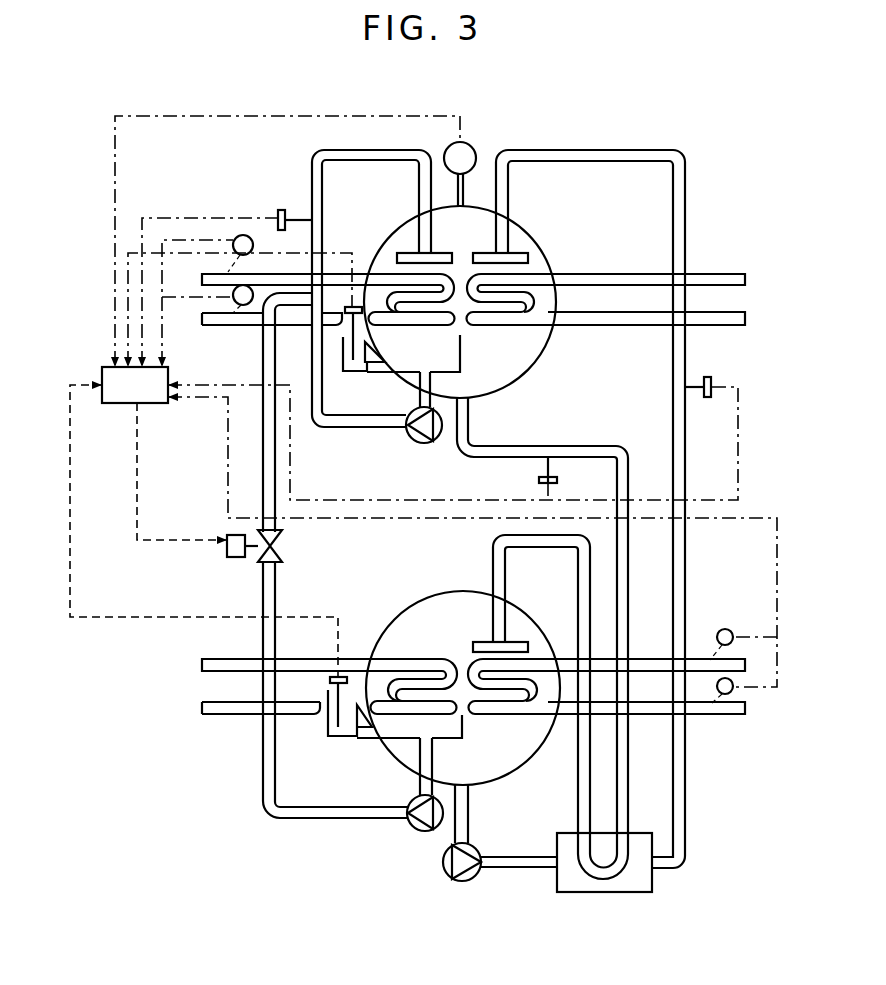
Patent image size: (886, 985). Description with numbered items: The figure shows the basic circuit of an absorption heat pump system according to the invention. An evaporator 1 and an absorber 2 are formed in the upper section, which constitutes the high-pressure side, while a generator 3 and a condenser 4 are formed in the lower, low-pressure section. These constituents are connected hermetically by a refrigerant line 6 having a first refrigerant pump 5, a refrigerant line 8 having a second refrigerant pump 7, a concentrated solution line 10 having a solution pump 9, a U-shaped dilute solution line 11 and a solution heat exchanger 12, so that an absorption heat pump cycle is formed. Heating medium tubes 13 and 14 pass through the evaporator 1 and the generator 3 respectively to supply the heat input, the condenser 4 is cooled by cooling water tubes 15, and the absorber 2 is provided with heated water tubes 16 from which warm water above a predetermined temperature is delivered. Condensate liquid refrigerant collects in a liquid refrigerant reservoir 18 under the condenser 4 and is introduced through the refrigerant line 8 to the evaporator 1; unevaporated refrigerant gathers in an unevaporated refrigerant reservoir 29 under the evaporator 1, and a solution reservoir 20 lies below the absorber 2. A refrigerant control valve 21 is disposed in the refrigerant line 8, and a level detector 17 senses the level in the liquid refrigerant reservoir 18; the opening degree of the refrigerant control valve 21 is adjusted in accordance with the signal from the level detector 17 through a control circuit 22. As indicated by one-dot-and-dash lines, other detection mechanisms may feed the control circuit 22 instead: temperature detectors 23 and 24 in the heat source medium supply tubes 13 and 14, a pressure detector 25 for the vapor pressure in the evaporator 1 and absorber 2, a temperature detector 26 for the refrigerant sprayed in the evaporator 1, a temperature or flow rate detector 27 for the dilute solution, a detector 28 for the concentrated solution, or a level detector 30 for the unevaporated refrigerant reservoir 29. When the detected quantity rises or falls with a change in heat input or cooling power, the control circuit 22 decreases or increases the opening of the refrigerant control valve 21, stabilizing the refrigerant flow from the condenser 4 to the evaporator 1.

The evaporator 1 is at (387, 260).
The absorber 2 is at (527, 245).
The generator 3 is at (533, 648).
The condenser 4 is at (413, 615).
The first refrigerant pump 5 is at (411, 441).
The refrigerant line 6 is at (370, 161).
The second refrigerant pump 7 is at (410, 828).
The refrigerant line 8 is at (263, 598).
The solution pump 9 is at (466, 881).
The concentrated solution line 10 is at (688, 544).
The dilute solution line 11 is at (630, 584).
The solution heat exchanger 12 is at (603, 892).
The heating medium tube 13 is at (240, 328).
The heating medium tube 14 is at (712, 716).
The cooling water tube 15 is at (240, 714).
The heated water tube 16 is at (712, 272).
The level detector 17 is at (330, 722).
The liquid refrigerant reservoir 18 is at (397, 730).
The solution reservoir 20 is at (497, 386).
The refrigerant control valve 21 is at (230, 557).
The control circuit 22 is at (116, 404).
The temperature detector 23 is at (241, 235).
The temperature detector 24 is at (725, 629).
The pressure detector 25 is at (468, 148).
The temperature detector 26 is at (281, 210).
The temperature or flow rate detector 27 is at (557, 480).
The detector 28 is at (713, 378).
The unevaporated refrigerant reservoir 29 is at (400, 357).
The level detector 30 is at (343, 358).